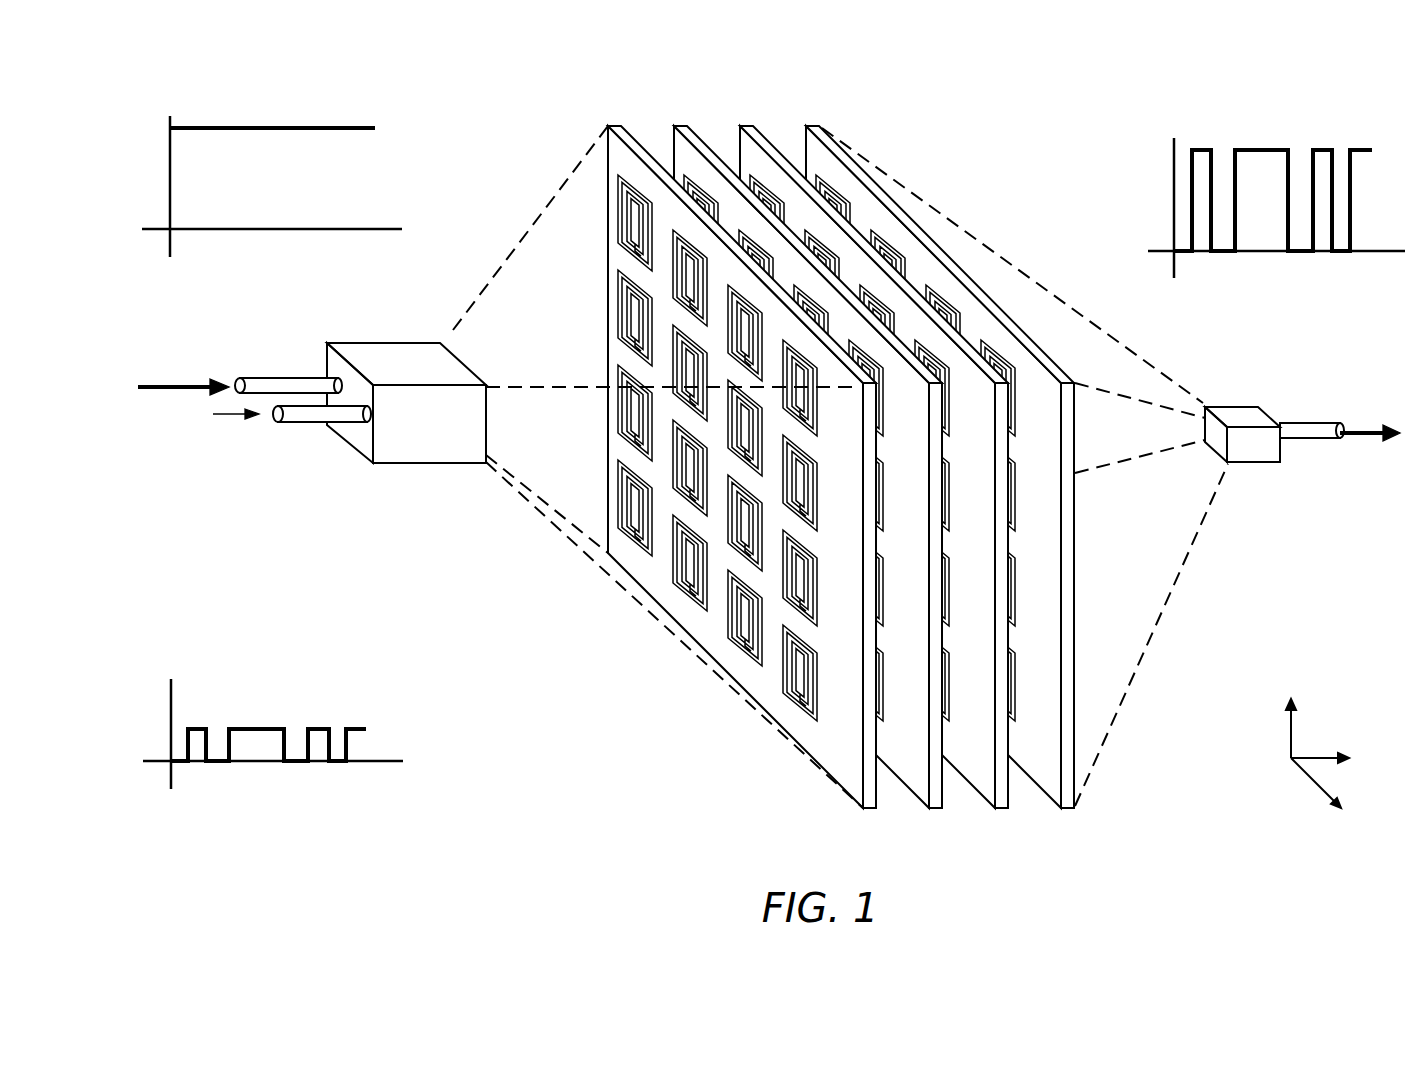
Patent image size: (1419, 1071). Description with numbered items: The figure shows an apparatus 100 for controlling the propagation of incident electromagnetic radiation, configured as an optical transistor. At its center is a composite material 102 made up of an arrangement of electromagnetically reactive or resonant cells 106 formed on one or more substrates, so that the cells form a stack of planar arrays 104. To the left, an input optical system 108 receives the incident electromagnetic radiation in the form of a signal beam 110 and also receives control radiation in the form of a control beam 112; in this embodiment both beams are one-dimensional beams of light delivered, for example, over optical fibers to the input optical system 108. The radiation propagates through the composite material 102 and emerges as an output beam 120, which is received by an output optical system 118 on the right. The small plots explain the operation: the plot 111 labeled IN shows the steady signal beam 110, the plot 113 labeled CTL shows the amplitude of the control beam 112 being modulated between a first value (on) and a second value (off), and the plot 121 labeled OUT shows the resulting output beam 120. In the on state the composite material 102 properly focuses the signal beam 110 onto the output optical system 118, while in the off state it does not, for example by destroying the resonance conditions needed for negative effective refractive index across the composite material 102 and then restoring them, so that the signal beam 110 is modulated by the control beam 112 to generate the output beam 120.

The apparatus 100 is at (540, 790).
The composite material 102 is at (824, 116).
The planar arrays 104 is at (867, 809).
The electromagnetically reactive or resonant cells 106 is at (674, 448).
The input optical system 108 is at (437, 463).
The signal beam 110 is at (180, 382).
The plot of the signal beam (IN) 111 is at (292, 123).
The control beam 112 is at (230, 418).
The plot of the control beam (CTL) 113 is at (263, 720).
The output optical system 118 is at (1240, 407).
The output beam 120 is at (1360, 427).
The plot of the output beam (OUT) 121 is at (1270, 148).